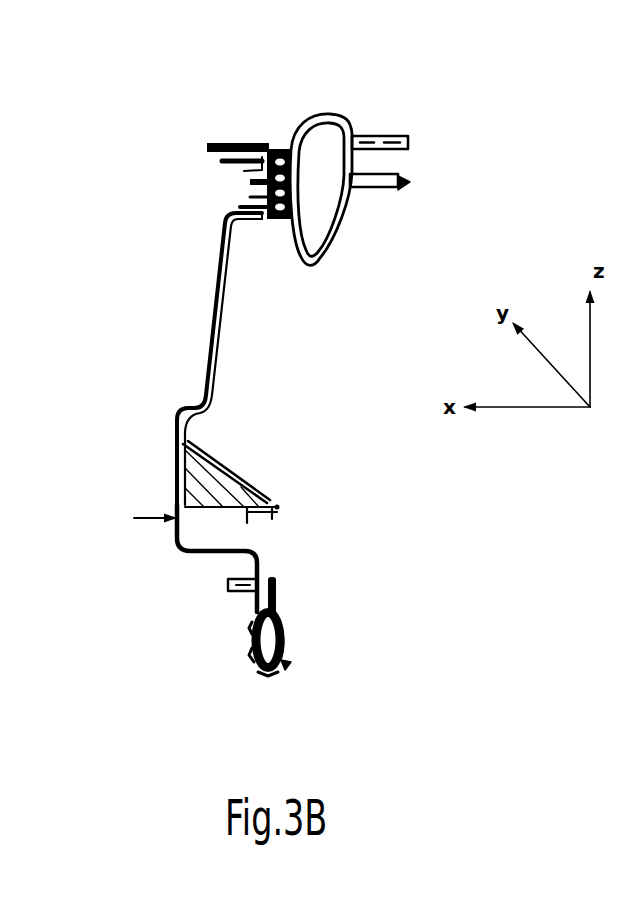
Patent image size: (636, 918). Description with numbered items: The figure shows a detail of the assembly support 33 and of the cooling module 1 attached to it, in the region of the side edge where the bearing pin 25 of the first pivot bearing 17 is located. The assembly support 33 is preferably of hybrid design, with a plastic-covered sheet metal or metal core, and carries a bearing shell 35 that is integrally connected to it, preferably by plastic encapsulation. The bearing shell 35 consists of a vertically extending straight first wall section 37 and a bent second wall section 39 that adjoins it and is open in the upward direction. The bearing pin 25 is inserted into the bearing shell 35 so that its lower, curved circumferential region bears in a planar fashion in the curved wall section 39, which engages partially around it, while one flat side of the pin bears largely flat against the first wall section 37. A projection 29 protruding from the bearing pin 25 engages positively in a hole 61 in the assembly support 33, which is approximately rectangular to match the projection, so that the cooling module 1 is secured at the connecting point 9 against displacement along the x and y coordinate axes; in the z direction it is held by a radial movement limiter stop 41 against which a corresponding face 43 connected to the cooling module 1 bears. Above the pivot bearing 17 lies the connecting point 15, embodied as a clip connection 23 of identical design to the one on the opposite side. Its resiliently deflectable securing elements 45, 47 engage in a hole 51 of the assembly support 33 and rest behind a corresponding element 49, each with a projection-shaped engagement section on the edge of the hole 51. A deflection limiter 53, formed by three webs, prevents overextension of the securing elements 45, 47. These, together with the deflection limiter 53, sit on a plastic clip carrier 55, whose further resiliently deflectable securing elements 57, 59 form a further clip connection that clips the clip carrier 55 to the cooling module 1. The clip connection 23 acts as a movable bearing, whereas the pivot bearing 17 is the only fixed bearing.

The cooling module 1 is at (302, 561).
The connecting point 9 is at (300, 626).
The connecting point 15 is at (263, 127).
The first pivot bearing 17 is at (292, 611).
The clip connection 23 is at (279, 126).
The bearing pin 25 is at (287, 642).
The projection 29 is at (253, 658).
The assembly support 33 is at (187, 330).
The bearing shell 35 is at (254, 677).
The first wall section 37 is at (250, 601).
The second wall section 39 is at (284, 666).
The radial movement limiter stop 41 is at (237, 488).
The corresponding face 43 is at (273, 507).
The securing element 45 is at (258, 194).
The securing element 47 is at (258, 161).
The corresponding element 49 is at (247, 218).
The hole 51 is at (252, 182).
The deflection limiter 53 is at (294, 127).
The clip carrier 55 is at (343, 111).
The further securing element 57 is at (402, 135).
The further securing element 59 is at (396, 189).
The hole 61 is at (246, 631).